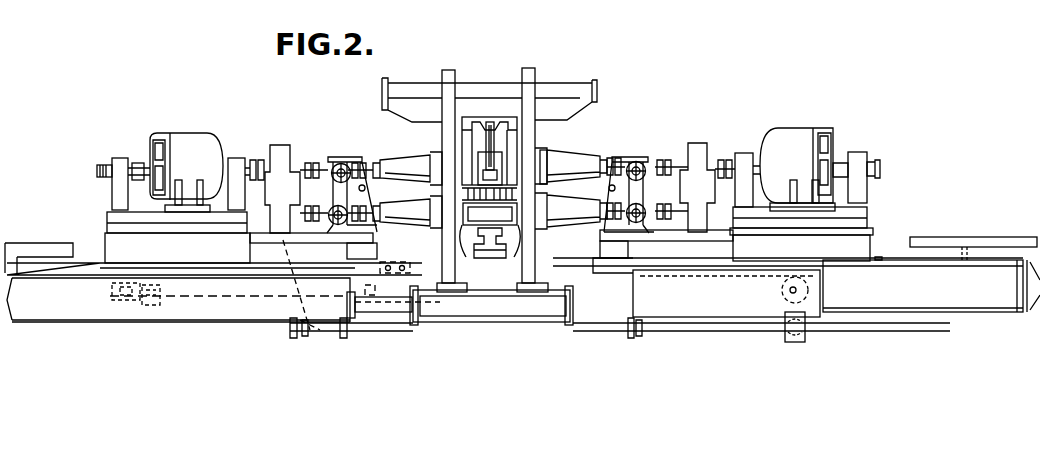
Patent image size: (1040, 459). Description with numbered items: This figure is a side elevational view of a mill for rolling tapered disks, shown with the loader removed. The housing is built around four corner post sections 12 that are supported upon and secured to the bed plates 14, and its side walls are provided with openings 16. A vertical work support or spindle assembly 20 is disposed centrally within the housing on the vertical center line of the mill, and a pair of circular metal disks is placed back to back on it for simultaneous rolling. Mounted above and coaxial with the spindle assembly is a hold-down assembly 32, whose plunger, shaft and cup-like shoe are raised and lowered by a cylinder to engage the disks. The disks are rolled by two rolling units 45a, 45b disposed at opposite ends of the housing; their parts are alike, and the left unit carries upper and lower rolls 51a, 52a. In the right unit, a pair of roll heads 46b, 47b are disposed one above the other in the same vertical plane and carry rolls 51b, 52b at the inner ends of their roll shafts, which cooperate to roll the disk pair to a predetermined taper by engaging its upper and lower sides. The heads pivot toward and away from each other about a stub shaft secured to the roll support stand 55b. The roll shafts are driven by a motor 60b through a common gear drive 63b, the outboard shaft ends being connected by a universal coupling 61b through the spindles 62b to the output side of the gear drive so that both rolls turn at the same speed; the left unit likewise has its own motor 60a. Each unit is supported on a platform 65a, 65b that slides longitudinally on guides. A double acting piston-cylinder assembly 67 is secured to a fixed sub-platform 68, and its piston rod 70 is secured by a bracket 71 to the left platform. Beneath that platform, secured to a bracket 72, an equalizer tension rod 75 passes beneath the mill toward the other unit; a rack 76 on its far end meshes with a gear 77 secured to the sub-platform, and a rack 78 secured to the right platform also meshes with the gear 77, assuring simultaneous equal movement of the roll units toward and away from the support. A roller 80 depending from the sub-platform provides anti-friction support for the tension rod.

The corner post sections 12 is at (412, 122).
The bed plates 14 is at (485, 308).
The openings 16 is at (523, 253).
The spindle assembly 20 is at (470, 253).
The hold-down assembly 32 is at (493, 106).
The rolling unit 45a is at (240, 131).
The rolling unit 45b is at (738, 142).
The roll head 46b is at (503, 168).
The roll head 47b is at (605, 240).
The roll 51a is at (476, 153).
The roll 51b is at (560, 150).
The roll 52a is at (476, 233).
The roll 52b is at (510, 197).
The roll support stand 55b is at (639, 165).
The motor 60a is at (176, 136).
The motor 60b is at (795, 137).
The universal coupling 61b is at (607, 163).
The spindles 62b is at (671, 181).
The common gear drive 63b is at (702, 145).
The platform 65a is at (107, 248).
The platform 65b is at (865, 240).
The double acting piston-cylinder assembly 67 is at (210, 290).
The fixed sub-platform 68 is at (92, 278).
The piston rod 70 is at (140, 289).
The bracket 71 is at (120, 287).
The bracket 72 is at (302, 307).
The equalizer tension rod 75 is at (396, 332).
The rack 76 is at (722, 323).
The gear 77 is at (810, 295).
The rack 78 is at (696, 273).
The roller 80 is at (798, 342).